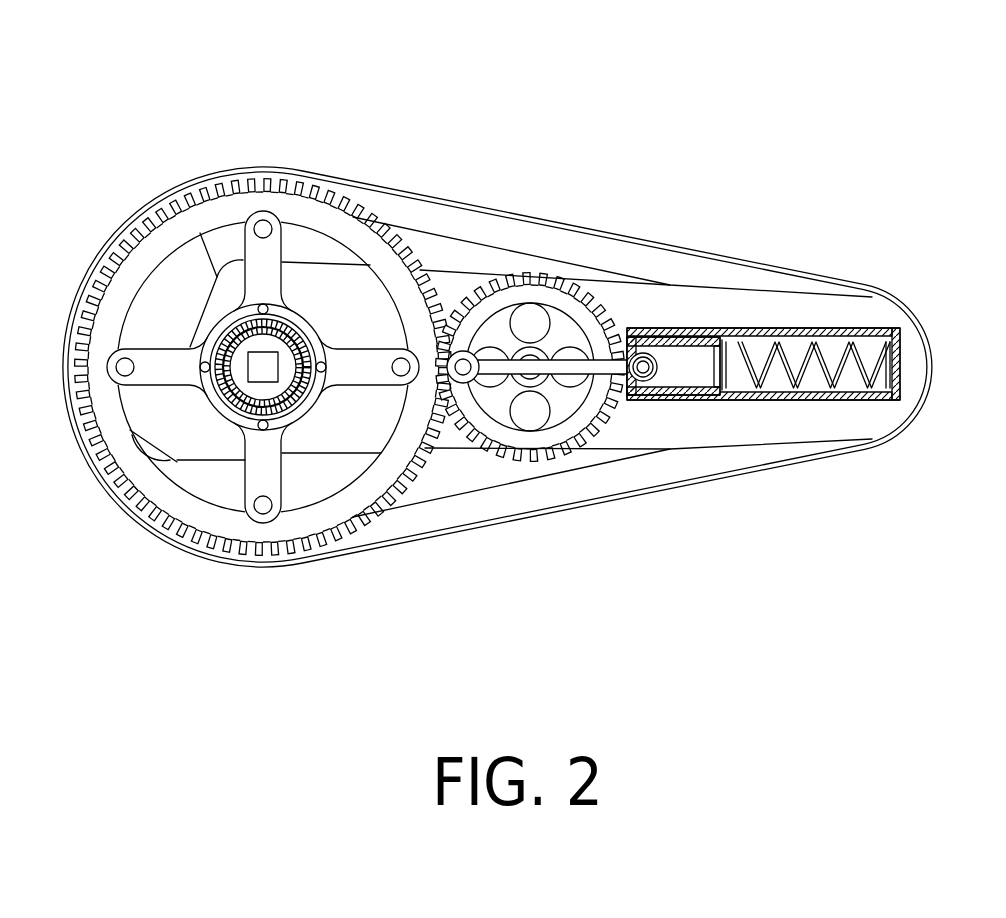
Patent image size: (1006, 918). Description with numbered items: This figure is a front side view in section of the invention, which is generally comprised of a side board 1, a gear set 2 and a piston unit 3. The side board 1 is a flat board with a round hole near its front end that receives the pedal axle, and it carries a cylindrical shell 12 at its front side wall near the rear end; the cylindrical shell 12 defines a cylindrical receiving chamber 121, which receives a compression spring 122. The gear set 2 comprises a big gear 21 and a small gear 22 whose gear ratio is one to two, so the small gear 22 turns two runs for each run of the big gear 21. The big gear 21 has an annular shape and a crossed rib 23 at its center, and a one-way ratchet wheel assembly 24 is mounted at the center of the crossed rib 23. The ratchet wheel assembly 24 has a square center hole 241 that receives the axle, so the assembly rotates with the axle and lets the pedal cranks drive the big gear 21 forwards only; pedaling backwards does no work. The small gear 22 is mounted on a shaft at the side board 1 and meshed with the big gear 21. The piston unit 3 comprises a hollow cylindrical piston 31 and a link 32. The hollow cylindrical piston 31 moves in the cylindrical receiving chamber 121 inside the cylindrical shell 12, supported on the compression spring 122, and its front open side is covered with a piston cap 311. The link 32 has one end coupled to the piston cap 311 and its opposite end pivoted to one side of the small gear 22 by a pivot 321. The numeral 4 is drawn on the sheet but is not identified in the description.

The side board 1 is at (647, 297).
The cylindrical shell 12 is at (813, 297).
The cylindrical receiving chamber 121 is at (847, 383).
The compression spring 122 is at (887, 352).
The gear set 2 is at (255, 379).
The big gear 21 is at (148, 258).
The small gear 22 is at (552, 297).
The crossed rib 23 is at (262, 285).
The one-way ratchet wheel assembly 24 is at (238, 400).
The square center hole 241 is at (288, 400).
The piston unit 3 is at (665, 470).
The hollow cylindrical piston 31 is at (700, 405).
The piston cap 311 is at (636, 385).
The link 32 is at (541, 497).
The pivot 321 is at (464, 384).
The cover plate 4 is at (245, 168).